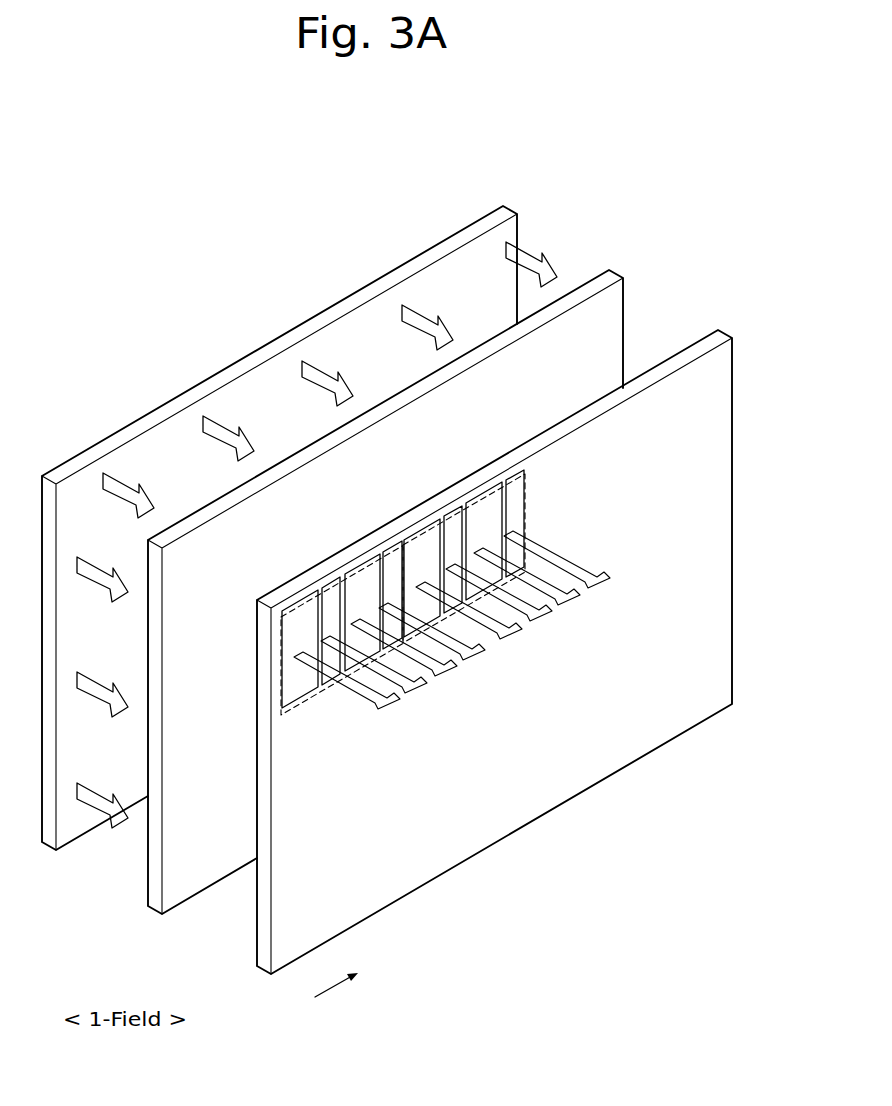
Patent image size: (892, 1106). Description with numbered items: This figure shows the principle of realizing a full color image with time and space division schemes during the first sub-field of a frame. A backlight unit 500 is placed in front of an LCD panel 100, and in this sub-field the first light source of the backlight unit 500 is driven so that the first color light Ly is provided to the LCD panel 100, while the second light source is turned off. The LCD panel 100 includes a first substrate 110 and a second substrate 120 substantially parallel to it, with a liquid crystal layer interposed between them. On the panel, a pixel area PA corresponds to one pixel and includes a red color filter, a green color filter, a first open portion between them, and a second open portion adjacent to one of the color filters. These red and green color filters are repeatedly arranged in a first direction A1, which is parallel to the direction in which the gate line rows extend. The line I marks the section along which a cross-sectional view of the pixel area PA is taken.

The backlight unit 500 is at (508, 209).
The first color light Ly is at (533, 250).
The LCD panel 100 is at (755, 277).
The first substrate 110 is at (611, 269).
The second substrate 120 is at (719, 332).
The pixel area PA is at (442, 618).
The line I-I' I is at (399, 594).
The first direction A1 is at (349, 973).